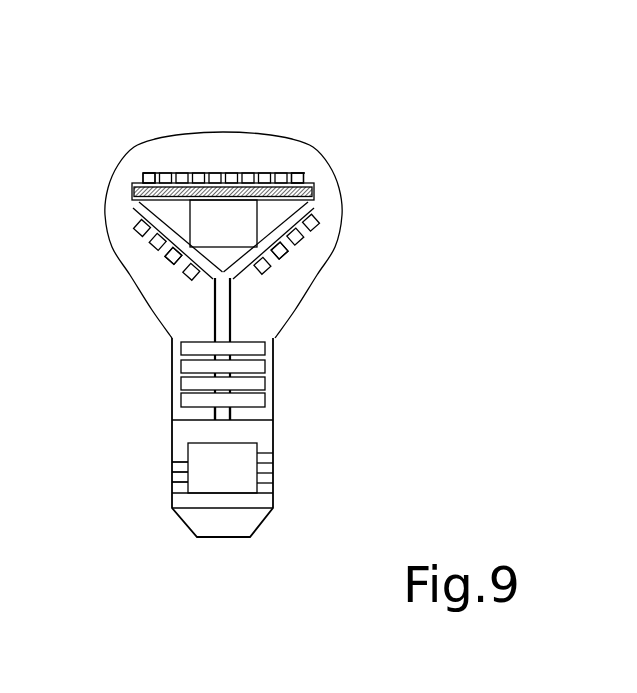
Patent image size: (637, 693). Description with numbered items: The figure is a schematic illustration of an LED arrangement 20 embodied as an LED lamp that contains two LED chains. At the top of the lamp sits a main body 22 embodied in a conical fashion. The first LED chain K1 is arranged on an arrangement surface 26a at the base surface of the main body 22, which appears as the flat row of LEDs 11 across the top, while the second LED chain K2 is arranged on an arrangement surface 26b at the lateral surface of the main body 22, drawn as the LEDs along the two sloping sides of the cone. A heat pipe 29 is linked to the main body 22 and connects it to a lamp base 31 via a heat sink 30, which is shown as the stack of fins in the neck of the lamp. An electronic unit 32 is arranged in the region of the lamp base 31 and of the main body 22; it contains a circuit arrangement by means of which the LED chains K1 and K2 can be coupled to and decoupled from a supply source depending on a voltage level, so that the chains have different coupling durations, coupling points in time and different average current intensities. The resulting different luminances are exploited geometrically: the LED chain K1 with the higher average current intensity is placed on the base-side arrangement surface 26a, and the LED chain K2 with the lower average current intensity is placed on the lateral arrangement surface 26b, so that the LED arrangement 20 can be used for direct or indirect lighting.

The LED arrangement 20 is at (107, 85).
The light-emitting diodes 11 is at (247, 175).
The arrangement surface 26a is at (293, 175).
The first LED chain K1 is at (147, 173).
The main body 22 is at (133, 210).
The electronic unit 32 is at (245, 210).
The arrangement surface 26b is at (138, 225).
The second LED chain K2 is at (172, 272).
The heat sink 30 is at (182, 382).
The heat pipe 29 is at (223, 412).
The lamp base 31 is at (180, 468).